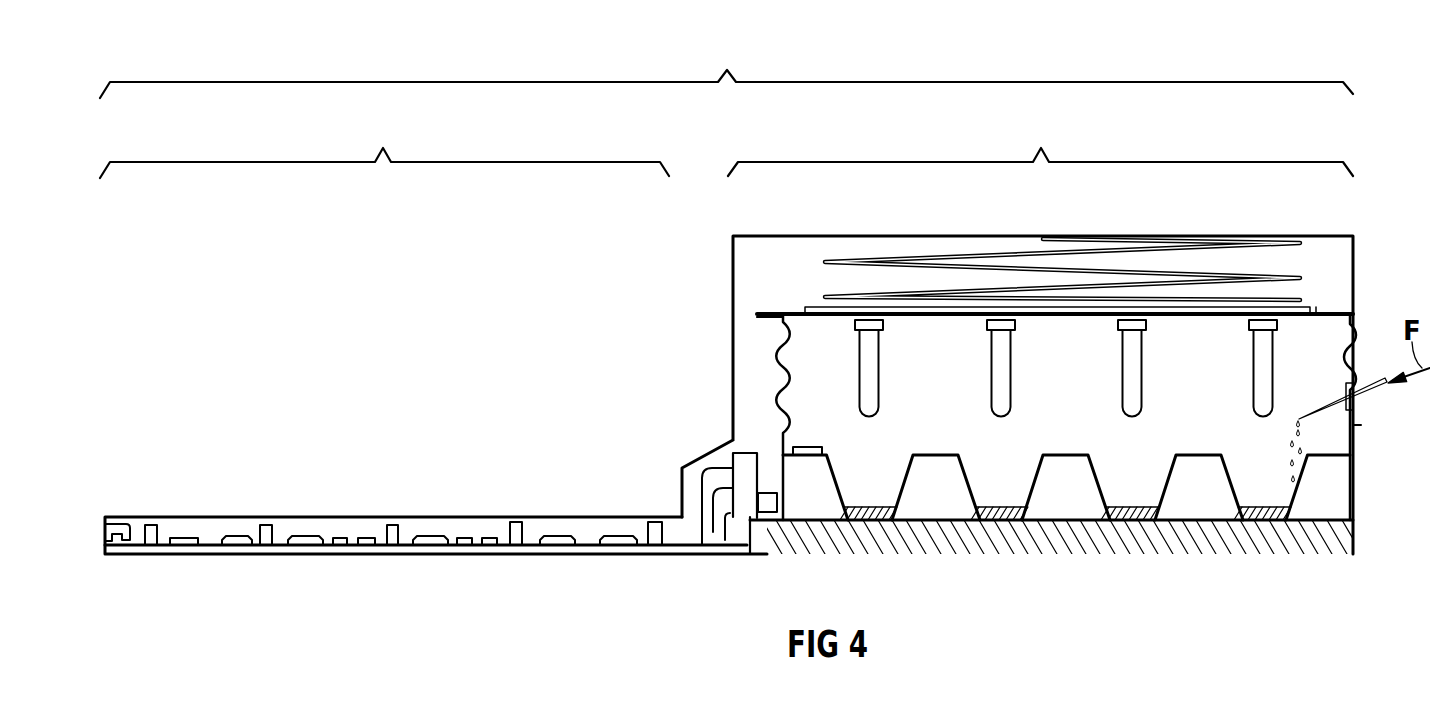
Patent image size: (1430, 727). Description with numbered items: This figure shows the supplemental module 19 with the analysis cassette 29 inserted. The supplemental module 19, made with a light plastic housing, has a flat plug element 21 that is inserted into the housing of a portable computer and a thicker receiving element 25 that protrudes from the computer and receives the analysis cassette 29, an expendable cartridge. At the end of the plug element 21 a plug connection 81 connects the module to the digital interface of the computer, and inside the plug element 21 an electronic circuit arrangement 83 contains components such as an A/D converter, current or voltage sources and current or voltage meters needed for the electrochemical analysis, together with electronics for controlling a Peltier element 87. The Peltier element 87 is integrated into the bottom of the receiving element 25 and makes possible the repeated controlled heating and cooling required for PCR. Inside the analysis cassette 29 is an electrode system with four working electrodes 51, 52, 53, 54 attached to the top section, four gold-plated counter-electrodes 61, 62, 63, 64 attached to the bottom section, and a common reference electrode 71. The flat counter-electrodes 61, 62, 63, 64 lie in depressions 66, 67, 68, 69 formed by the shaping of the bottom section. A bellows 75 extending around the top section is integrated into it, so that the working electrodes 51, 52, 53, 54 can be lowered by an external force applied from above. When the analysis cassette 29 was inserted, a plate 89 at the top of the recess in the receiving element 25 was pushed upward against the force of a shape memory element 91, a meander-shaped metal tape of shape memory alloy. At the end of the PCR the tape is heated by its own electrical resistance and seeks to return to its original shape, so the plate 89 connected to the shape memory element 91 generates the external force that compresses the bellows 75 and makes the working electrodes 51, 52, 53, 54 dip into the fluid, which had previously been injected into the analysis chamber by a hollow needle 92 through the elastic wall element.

The supplemental module 19 is at (741, 59).
The flat plug element 21 is at (433, 332).
The receiving element 25 is at (1021, 332).
The analysis cassette 29 is at (1077, 430).
The working electrode 51 is at (1254, 371).
The working electrode 52 is at (1123, 371).
The working electrode 53 is at (992, 371).
The working electrode 54 is at (860, 371).
The counter-electrode 61 is at (1264, 512).
The counter-electrode 62 is at (1132, 512).
The counter-electrode 63 is at (1001, 512).
The counter-electrode 64 is at (871, 512).
The depression 66 is at (1278, 491).
The depression 67 is at (1146, 491).
The depression 68 is at (1019, 491).
The depression 69 is at (884, 491).
The common reference electrode 71 is at (808, 447).
The bellows 75 is at (780, 349).
The plug connection 81 is at (105, 531).
The electronic circuit arrangement 83 is at (400, 551).
The Peltier element 87 is at (1070, 537).
The plate 89 is at (1173, 316).
The shape memory element 91 is at (1274, 272).
The hollow needle 92 is at (1337, 400).